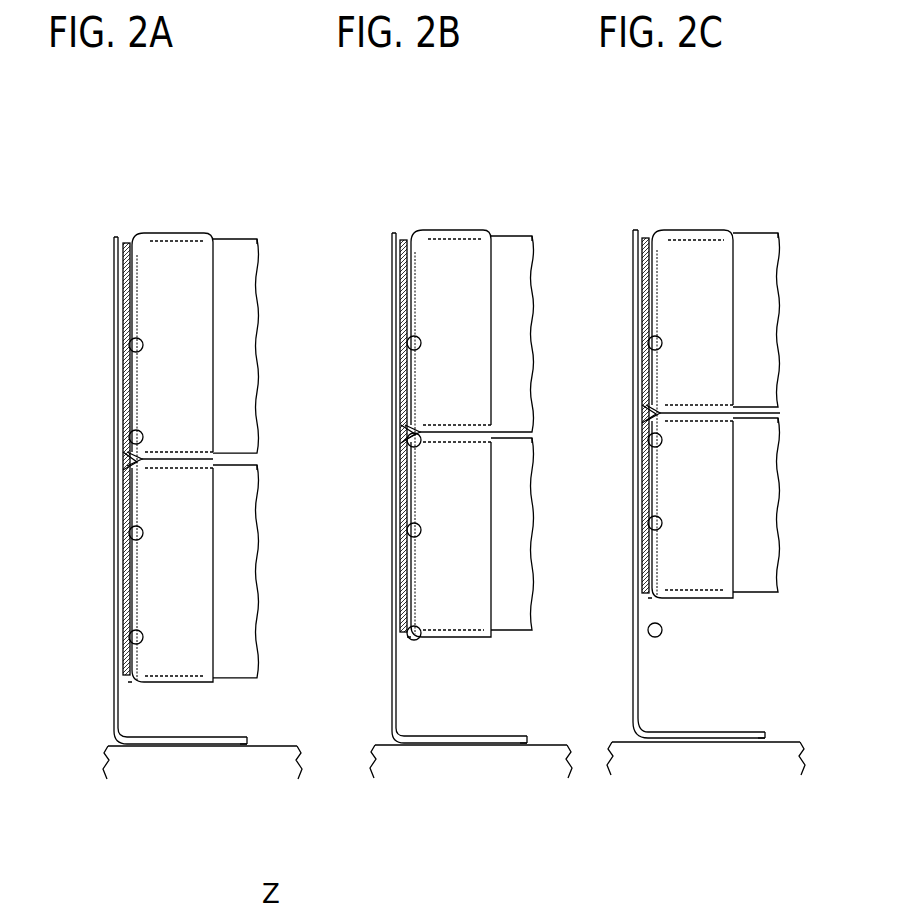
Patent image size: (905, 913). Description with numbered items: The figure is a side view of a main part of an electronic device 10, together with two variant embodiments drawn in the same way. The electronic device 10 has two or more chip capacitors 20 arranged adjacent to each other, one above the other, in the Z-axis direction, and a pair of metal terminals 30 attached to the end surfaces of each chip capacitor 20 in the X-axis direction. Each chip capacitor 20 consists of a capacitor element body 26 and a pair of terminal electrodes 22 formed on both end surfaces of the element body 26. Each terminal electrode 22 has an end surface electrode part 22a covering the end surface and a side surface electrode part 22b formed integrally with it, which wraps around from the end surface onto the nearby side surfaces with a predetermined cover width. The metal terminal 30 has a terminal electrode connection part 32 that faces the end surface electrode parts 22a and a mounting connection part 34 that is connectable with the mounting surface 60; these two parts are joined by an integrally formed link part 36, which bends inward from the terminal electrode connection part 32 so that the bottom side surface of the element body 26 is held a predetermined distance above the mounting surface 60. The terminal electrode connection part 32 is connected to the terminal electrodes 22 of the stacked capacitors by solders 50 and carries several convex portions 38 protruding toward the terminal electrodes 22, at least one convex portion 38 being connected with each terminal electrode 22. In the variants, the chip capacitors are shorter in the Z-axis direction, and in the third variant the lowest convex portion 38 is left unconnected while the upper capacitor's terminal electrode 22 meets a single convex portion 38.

In FIG. 2A, the electronic device 10 is at (137, 224).
In FIG. 2A, the chip capacitor 20 is at (234, 254).
In FIG. 2A, the terminal electrode 22 is at (185, 249).
In FIG. 2B, the terminal electrode 22 is at (464, 251).
In FIG. 2C, the terminal electrode 22 is at (701, 249).
In FIG. 2A, the end surface electrode part 22a is at (125, 302).
In FIG. 2B, the end surface electrode part 22a is at (401, 372).
In FIG. 2C, the end surface electrode part 22a is at (632, 262).
In FIG. 2A, the side surface electrode part 22b is at (178, 447).
In FIG. 2B, the side surface electrode part 22b is at (411, 463).
In FIG. 2C, the side surface electrode part 22b is at (660, 399).
In FIG. 2A, the capacitor element body 26 is at (233, 335).
In FIG. 2B, the capacitor element body 26 is at (532, 280).
In FIG. 2C, the capacitor element body 26 is at (745, 233).
In FIG. 2A, the metal terminal 30 is at (113, 276).
In FIG. 2B, the metal terminal 30 is at (389, 276).
In FIG. 2C, the metal terminal 30 is at (632, 291).
In FIG. 2A, the terminal electrode connection part 32 is at (133, 462).
In FIG. 2B, the terminal electrode connection part 32 is at (393, 312).
In FIG. 2C, the terminal electrode connection part 32 is at (640, 542).
In FIG. 2A, the mounting connection part 34 is at (205, 750).
In FIG. 2B, the mounting connection part 34 is at (476, 748).
In FIG. 2C, the mounting connection part 34 is at (708, 745).
In FIG. 2A, the link part 36 is at (115, 718).
In FIG. 2B, the link part 36 is at (407, 682).
In FIG. 2C, the link part 36 is at (630, 690).
In FIG. 2A, the convex portion 38 is at (128, 350).
In FIG. 2B, the convex portion 38 is at (403, 352).
In FIG. 2C, the convex portion 38 is at (643, 350).
In FIG. 2A, the solder 50 is at (135, 396).
In FIG. 2B, the solder 50 is at (408, 224).
In FIG. 2C, the solder 50 is at (650, 362).
In FIG. 2A, the mounting surface 60 is at (280, 735).
In FIG. 2B, the mounting surface 60 is at (553, 740).
In FIG. 2C, the mounting surface 60 is at (783, 736).